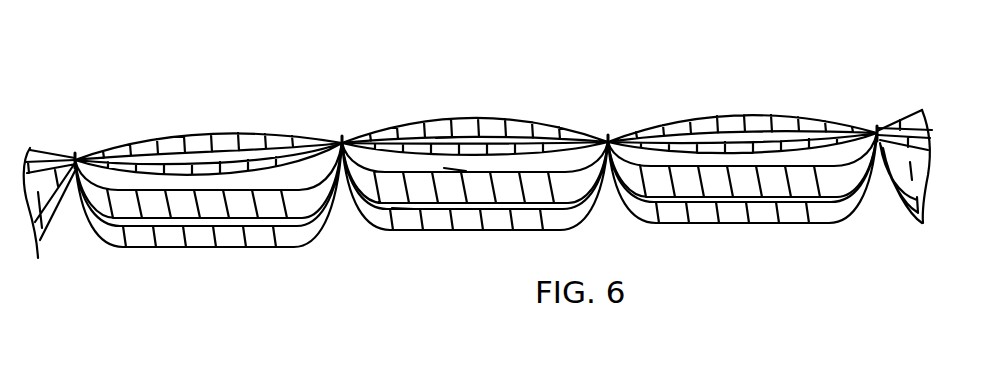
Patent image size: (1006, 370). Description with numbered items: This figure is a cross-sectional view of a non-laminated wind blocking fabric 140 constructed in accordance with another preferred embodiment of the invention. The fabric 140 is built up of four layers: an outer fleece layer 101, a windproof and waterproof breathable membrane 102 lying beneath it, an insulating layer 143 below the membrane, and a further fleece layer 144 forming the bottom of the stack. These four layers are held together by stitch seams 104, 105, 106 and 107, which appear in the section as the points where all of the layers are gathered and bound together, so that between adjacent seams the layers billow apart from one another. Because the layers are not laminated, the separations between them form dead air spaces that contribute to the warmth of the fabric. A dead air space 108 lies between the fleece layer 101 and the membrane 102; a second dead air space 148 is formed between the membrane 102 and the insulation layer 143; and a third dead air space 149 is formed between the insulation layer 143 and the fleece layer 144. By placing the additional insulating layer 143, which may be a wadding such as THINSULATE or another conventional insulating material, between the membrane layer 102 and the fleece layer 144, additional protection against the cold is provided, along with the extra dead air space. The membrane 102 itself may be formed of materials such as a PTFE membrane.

The fleece layer 101 is at (133, 138).
The windproof and waterproof breathable membrane 102 is at (213, 160).
The stitch seam 104 is at (76, 156).
The stitch seam 105 is at (343, 140).
The stitch seam 106 is at (608, 138).
The stitch seam 107 is at (877, 128).
The dead air space 108 is at (442, 146).
The fabric 140 is at (506, 101).
The insulating layer 143 is at (170, 210).
The fleece layer 144 is at (273, 232).
The dead air space 148 is at (450, 167).
The dead air space 149 is at (403, 207).